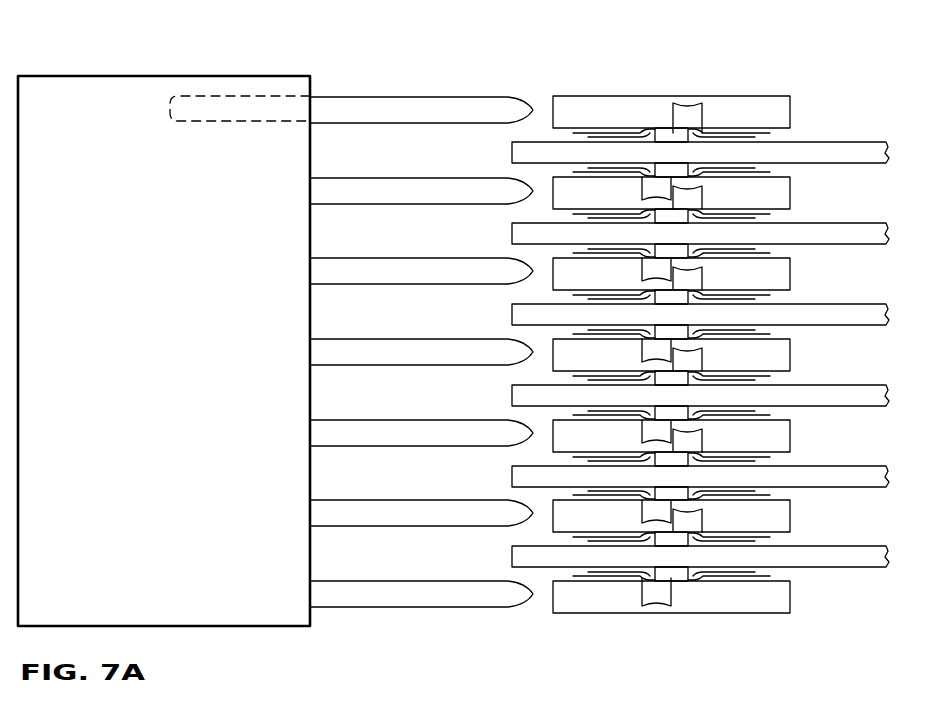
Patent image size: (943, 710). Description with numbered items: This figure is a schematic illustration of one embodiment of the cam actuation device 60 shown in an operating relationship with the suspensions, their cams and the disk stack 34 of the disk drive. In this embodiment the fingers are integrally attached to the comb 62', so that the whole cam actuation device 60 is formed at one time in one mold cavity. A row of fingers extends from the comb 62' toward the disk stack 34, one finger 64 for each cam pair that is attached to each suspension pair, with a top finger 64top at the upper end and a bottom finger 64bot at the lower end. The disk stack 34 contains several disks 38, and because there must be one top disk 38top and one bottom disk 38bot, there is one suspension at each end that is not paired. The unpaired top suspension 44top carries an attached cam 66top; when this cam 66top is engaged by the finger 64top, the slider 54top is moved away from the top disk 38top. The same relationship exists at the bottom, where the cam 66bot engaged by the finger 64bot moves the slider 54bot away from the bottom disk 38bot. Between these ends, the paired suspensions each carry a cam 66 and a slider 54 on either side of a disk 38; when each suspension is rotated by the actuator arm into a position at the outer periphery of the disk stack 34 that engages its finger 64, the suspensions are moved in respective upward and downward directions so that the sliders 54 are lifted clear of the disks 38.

The comb 62' is at (164, 326).
The cam actuation device 60 is at (342, 72).
The top finger 64top is at (475, 100).
The finger 64 is at (410, 188).
The bottom finger 64bot is at (438, 600).
The top disk 38top is at (866, 150).
The disk 38 is at (873, 390).
The bottom disk 38bot is at (863, 570).
The top suspension 44top is at (757, 97).
The top slider 54top is at (662, 130).
The slider 54 is at (676, 300).
The bottom slider 54bot is at (680, 575).
The top cam 66top is at (688, 103).
The cam 66 is at (648, 183).
The bottom cam 66bot is at (658, 607).
The disk stack 34 is at (813, 105).